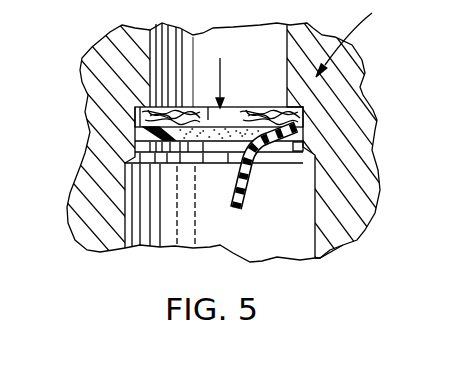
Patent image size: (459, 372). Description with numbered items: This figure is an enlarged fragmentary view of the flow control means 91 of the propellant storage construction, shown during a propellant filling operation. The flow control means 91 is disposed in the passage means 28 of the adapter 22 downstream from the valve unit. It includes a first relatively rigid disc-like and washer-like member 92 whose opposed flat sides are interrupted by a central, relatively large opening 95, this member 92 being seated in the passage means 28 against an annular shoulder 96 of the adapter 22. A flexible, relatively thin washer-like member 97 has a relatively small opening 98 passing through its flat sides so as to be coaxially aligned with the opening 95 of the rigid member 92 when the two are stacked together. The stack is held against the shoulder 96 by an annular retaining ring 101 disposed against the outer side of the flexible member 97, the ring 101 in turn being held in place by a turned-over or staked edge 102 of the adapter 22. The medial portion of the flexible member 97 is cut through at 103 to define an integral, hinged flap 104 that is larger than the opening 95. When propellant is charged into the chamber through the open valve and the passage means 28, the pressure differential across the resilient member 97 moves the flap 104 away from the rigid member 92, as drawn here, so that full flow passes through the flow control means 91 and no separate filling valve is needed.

The adapter 22 is at (345, 102).
The passage means 28 is at (316, 240).
The flow control means 91 is at (358, 38).
The first relatively rigid disc-like and washer-like member 92 is at (135, 117).
The central relatively large opening 95 is at (229, 107).
The annular shoulder 96 is at (137, 110).
The flexible relatively thin washer-like member 97 is at (130, 134).
The relatively small opening 98 is at (260, 170).
The annular retaining ring 101 is at (296, 148).
The turned-over or staked edge 102 is at (130, 164).
The cut 103 is at (192, 165).
The hinged flap 104 is at (243, 198).